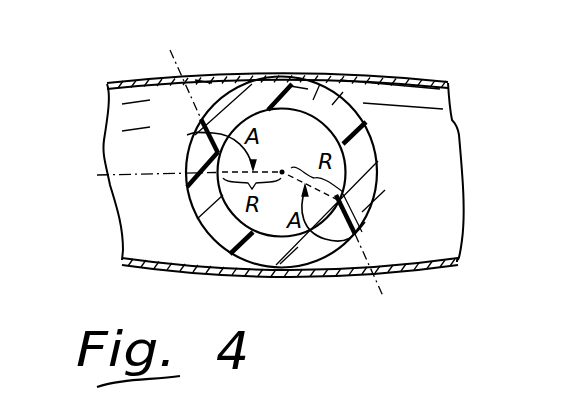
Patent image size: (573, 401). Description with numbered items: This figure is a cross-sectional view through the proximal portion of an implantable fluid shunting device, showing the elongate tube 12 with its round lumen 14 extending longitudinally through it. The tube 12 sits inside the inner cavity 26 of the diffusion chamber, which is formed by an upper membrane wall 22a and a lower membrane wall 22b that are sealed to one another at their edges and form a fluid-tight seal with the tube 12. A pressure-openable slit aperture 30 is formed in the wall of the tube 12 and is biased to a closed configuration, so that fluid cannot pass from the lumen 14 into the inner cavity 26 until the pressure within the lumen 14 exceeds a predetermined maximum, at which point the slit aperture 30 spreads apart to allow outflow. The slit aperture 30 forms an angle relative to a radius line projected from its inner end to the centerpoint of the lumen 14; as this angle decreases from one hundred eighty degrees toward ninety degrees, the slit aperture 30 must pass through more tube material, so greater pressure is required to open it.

The elongate tube 12 is at (313, 100).
The lumen 14 is at (285, 117).
The upper membrane wall 22a is at (423, 78).
The lower membrane wall 22b is at (447, 265).
The inner cavity 26 is at (427, 132).
The slit aperture 30 is at (194, 127).